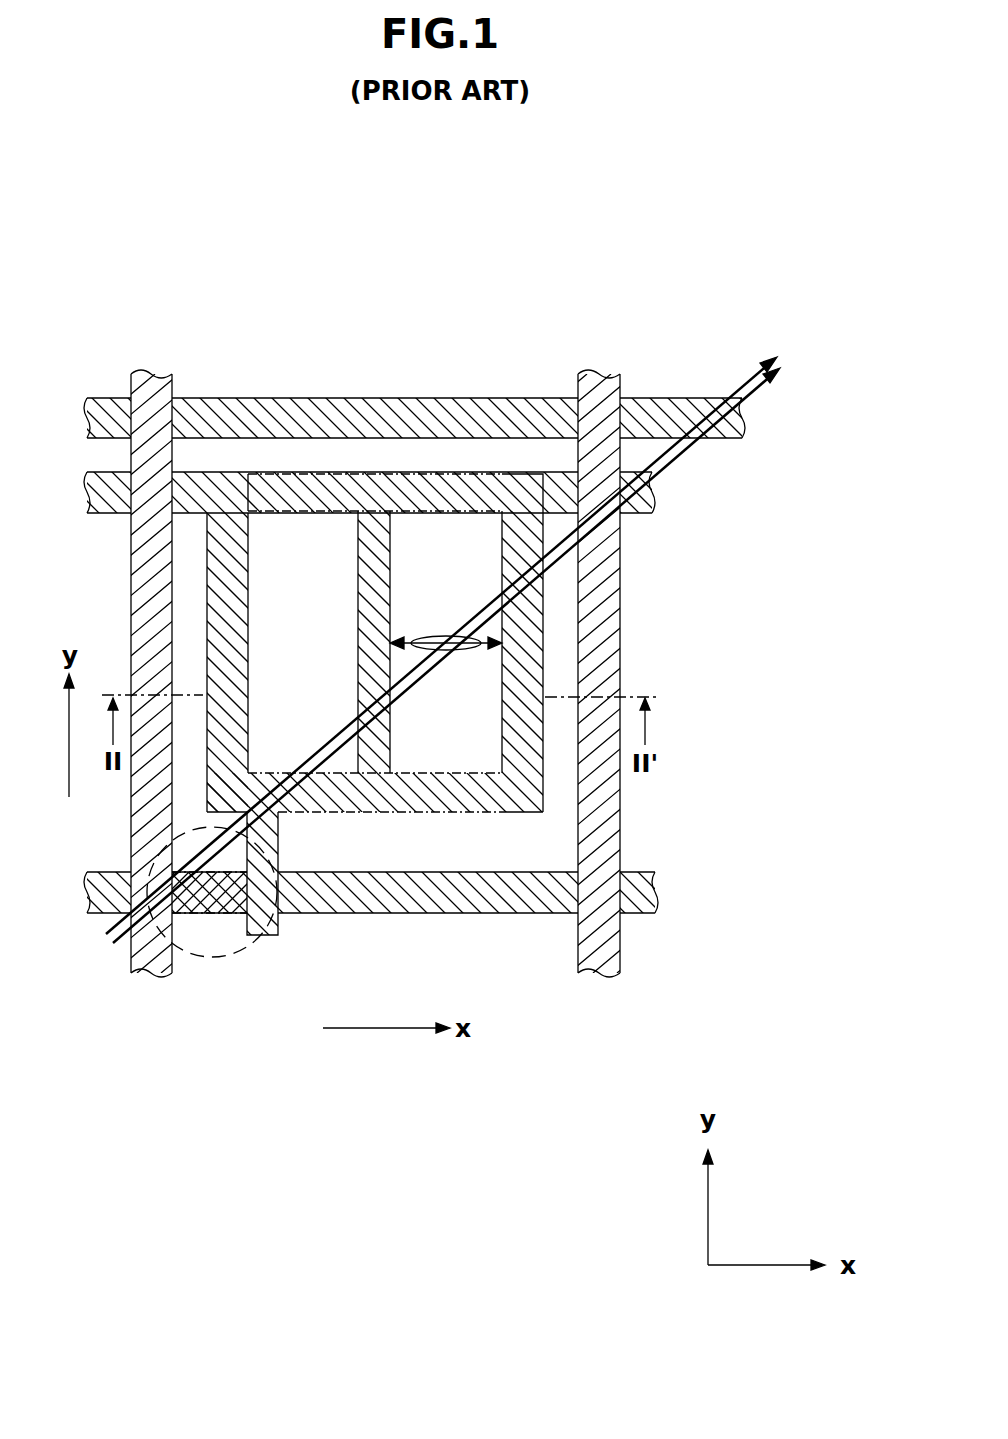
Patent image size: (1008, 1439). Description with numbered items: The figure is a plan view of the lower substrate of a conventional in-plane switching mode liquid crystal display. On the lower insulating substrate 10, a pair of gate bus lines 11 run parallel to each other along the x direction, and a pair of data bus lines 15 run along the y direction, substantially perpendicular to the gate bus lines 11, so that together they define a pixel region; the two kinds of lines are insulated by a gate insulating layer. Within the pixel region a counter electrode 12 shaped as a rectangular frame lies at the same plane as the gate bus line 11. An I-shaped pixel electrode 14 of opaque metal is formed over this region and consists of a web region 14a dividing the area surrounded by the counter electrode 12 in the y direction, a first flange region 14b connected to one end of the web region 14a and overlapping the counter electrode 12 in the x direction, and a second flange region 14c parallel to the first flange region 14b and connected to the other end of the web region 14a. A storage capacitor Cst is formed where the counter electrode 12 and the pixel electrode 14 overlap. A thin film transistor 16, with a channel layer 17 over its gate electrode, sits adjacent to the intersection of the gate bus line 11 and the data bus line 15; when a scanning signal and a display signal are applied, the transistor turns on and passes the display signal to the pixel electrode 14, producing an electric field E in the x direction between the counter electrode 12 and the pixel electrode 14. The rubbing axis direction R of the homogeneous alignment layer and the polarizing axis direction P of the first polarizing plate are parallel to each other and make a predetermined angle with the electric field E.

The lower insulating substrate 10 is at (394, 980).
The gate bus line 11 is at (730, 420).
The counter electrode 12 is at (537, 493).
The pixel electrode 14 is at (763, 800).
The web region 14a is at (378, 630).
The first flange region 14b is at (495, 494).
The second flange region 14c is at (487, 798).
The data bus line 15 is at (147, 974).
The thin film transistor 16 is at (246, 950).
The channel layer 17 is at (213, 904).
The storage capacitor Cst is at (368, 497).
The electric field E is at (446, 662).
The rubbing axis direction R is at (449, 630).
The polarizing axis direction P is at (458, 650).